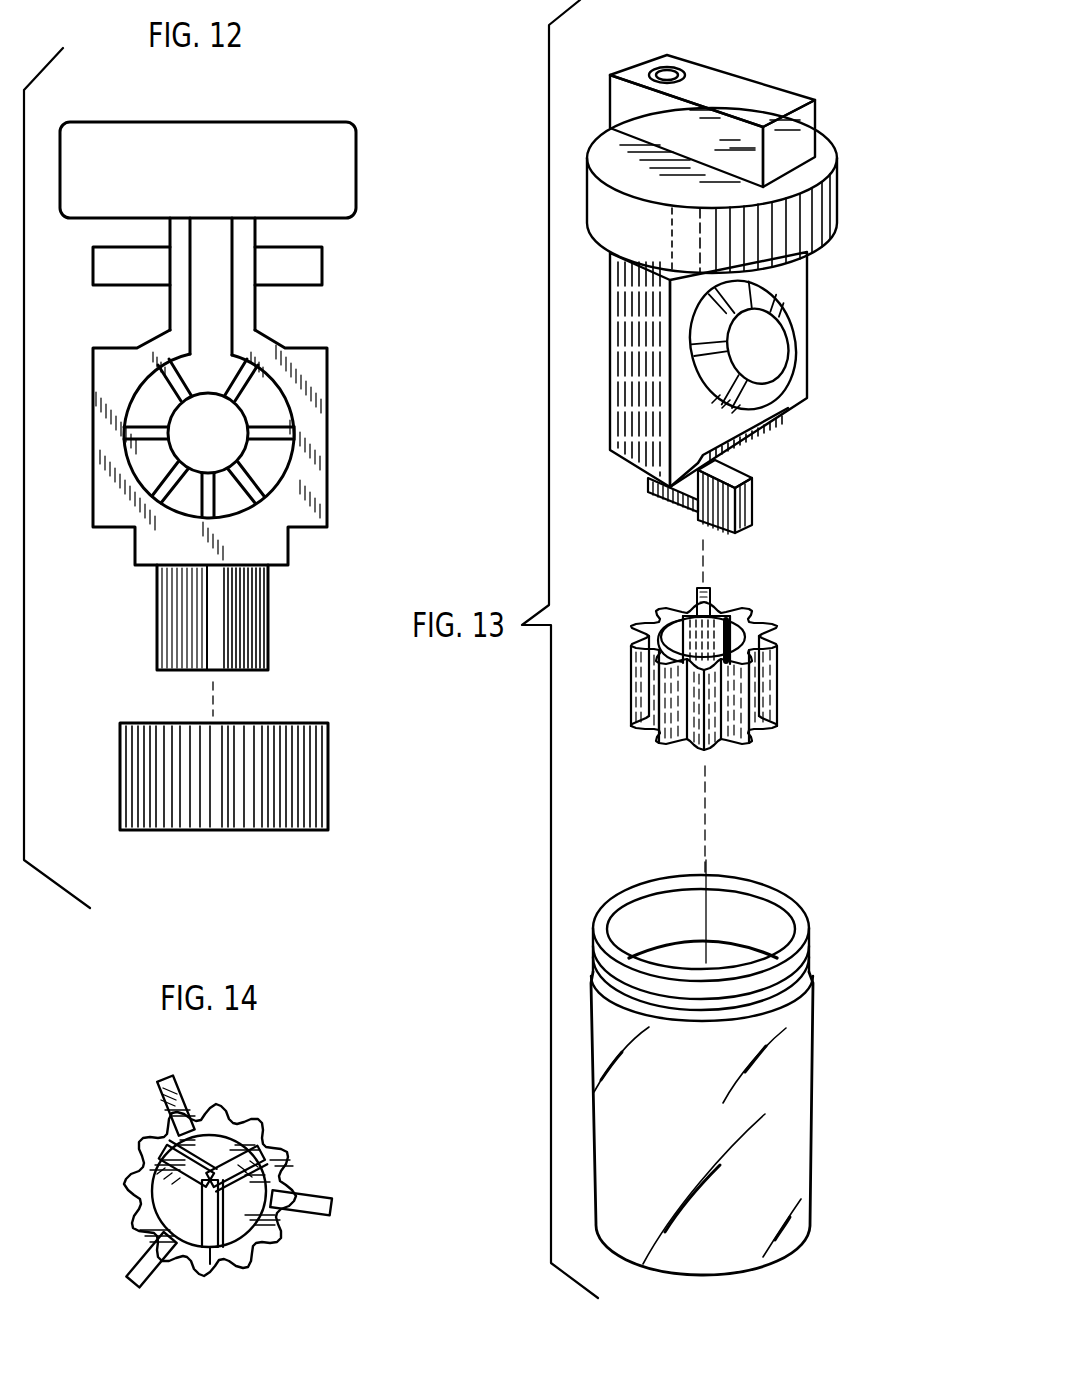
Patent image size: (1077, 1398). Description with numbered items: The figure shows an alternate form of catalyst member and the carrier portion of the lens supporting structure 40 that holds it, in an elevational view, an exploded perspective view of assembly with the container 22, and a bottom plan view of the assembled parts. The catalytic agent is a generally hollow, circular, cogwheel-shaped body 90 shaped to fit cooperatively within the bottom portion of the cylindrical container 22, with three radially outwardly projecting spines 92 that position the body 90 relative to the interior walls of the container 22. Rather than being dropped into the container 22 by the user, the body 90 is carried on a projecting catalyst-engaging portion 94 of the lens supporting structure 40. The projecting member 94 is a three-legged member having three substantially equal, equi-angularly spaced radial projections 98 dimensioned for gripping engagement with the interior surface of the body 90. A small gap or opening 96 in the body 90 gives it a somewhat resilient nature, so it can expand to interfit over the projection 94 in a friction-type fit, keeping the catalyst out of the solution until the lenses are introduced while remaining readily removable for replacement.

In FIG. 13, the container 22 is at (733, 1275).
In FIG. 12, the lens supporting structure 40 is at (346, 418).
In FIG. 13, the lens supporting structure 40 is at (818, 302).
In FIG. 12, the cogwheel-shaped body 90 is at (120, 755).
In FIG. 13, the cogwheel-shaped body 90 is at (765, 647).
In FIG. 14, the cogwheel-shaped body 90 is at (133, 1192).
In FIG. 13, the spines 92 is at (780, 736).
In FIG. 14, the spines 92 is at (165, 1081).
In FIG. 12, the catalyst-engaging portion 94 is at (268, 668).
In FIG. 13, the catalyst-engaging portion 94 is at (763, 452).
In FIG. 14, the catalyst-engaging portion 94 is at (259, 1158).
In FIG. 13, the gap 96 is at (738, 608).
In FIG. 14, the gap 96 is at (215, 1252).
In FIG. 12, the radial projections 98 is at (237, 592).
In FIG. 13, the radial projections 98 is at (690, 512).
In FIG. 14, the radial projections 98 is at (160, 1164).